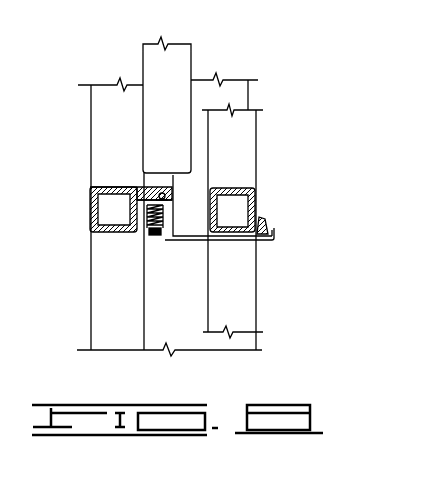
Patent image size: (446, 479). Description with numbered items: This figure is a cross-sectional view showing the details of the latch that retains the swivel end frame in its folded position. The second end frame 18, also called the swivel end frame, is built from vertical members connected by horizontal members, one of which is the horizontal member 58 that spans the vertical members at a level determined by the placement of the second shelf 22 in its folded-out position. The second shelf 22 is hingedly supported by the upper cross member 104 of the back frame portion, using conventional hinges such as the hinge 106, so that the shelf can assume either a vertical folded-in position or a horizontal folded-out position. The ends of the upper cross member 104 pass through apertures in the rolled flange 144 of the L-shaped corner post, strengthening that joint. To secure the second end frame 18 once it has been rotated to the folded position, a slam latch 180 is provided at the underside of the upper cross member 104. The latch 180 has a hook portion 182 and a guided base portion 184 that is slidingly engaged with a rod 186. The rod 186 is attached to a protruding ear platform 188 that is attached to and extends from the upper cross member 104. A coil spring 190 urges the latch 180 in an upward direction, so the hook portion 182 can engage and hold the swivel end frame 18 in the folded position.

The second end frame 18 is at (243, 127).
The second shelf 22 is at (150, 62).
The horizontal member 58 is at (256, 198).
The upper cross member 104 is at (92, 197).
The hinge 106 is at (140, 187).
The rolled flange 144 is at (107, 113).
The slam latch 180 is at (195, 240).
The hook portion 182 is at (266, 228).
The guided base portion 184 is at (167, 193).
The rod 186 is at (152, 220).
The protruding ear platform 188 is at (137, 186).
The coil spring 190 is at (156, 236).